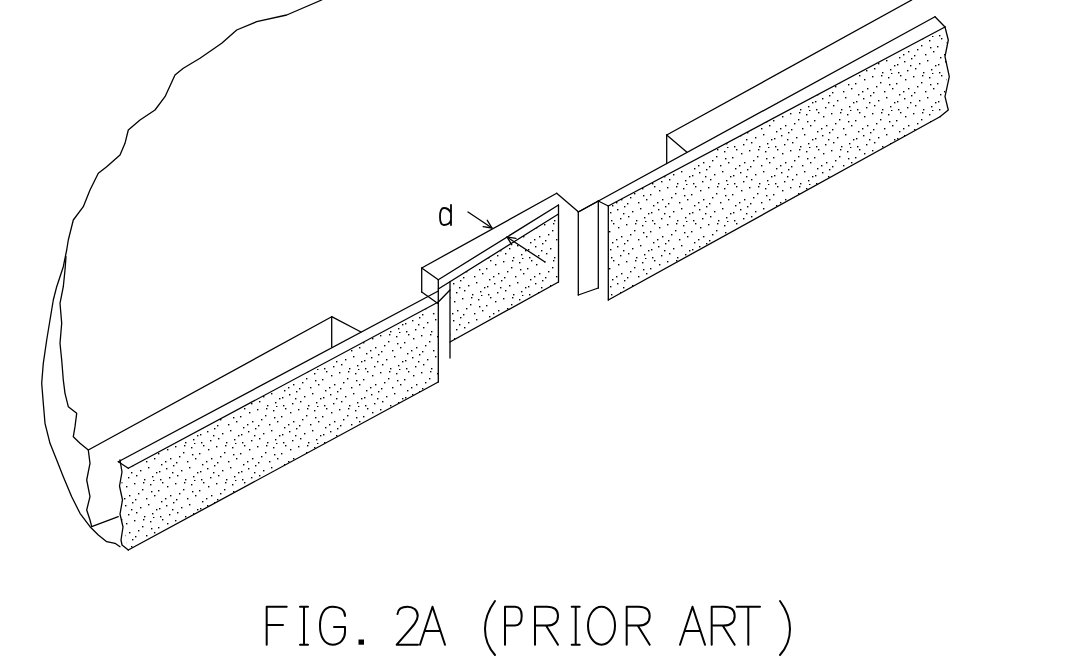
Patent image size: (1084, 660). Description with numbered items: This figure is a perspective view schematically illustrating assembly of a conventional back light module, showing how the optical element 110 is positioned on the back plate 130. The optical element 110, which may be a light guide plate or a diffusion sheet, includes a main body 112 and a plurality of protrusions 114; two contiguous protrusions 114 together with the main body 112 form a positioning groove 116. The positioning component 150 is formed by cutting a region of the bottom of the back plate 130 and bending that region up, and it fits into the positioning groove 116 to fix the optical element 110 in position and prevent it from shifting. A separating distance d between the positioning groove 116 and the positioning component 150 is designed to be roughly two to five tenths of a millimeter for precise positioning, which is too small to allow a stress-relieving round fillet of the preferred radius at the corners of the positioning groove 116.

The optical element 110 is at (682, 424).
The main body 112 is at (632, 123).
The protrusions 114 is at (442, 345).
The positioning groove 116 is at (512, 322).
The back plate 130 is at (809, 168).
The positioning component 150 is at (464, 307).